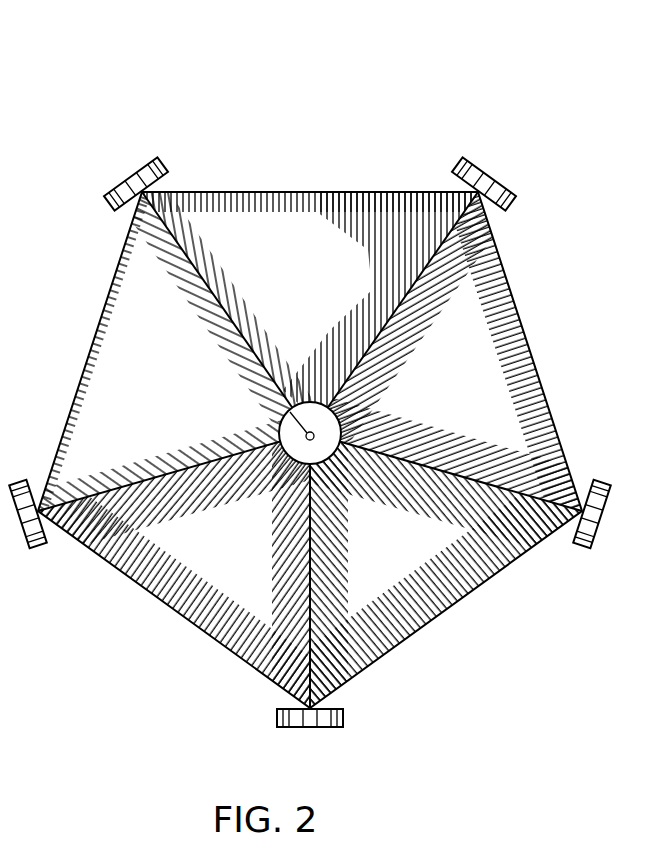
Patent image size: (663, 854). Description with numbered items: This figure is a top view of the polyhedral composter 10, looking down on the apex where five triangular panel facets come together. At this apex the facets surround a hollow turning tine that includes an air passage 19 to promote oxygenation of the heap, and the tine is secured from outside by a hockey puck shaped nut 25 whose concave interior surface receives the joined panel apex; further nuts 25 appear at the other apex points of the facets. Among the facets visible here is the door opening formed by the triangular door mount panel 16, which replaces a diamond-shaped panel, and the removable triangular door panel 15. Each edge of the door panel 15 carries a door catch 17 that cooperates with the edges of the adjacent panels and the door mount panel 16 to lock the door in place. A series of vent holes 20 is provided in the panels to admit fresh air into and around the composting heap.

The polyhedral composter 10 is at (331, 33).
The door panel 15 is at (98, 322).
The door mount panel 16 is at (354, 192).
The door catch 17 is at (102, 363).
The air passage 19 is at (290, 412).
The vent holes 20 is at (247, 247).
The hockey puck shaped nut 25 is at (163, 168).